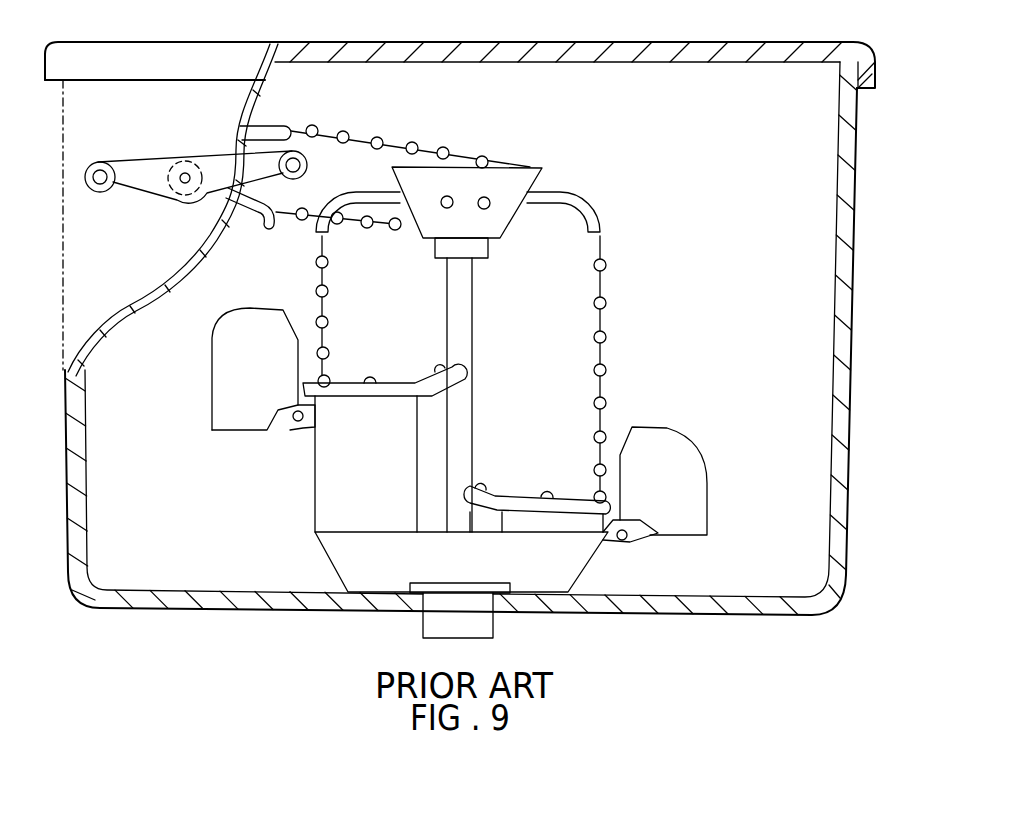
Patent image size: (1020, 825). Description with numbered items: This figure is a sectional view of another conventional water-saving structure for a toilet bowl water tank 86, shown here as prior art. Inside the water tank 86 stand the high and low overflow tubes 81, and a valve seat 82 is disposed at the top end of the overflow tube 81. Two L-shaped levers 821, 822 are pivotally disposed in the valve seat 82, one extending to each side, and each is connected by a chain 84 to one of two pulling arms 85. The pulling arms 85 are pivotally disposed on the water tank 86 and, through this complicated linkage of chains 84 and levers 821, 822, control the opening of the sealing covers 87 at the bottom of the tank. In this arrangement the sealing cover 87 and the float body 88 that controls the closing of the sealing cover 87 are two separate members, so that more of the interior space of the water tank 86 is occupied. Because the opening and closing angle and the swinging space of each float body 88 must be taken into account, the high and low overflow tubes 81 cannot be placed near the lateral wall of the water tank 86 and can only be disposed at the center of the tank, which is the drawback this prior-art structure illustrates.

The overflow tube 81 is at (338, 568).
The valve seat 82 is at (500, 218).
The L-shaped lever 821 is at (364, 190).
The L-shaped lever 822 is at (570, 210).
The chain 84 is at (397, 230).
The pulling arm 85 is at (271, 134).
The water tank 86 is at (850, 278).
The sealing cover 87 is at (354, 383).
The float body 88 is at (218, 392).